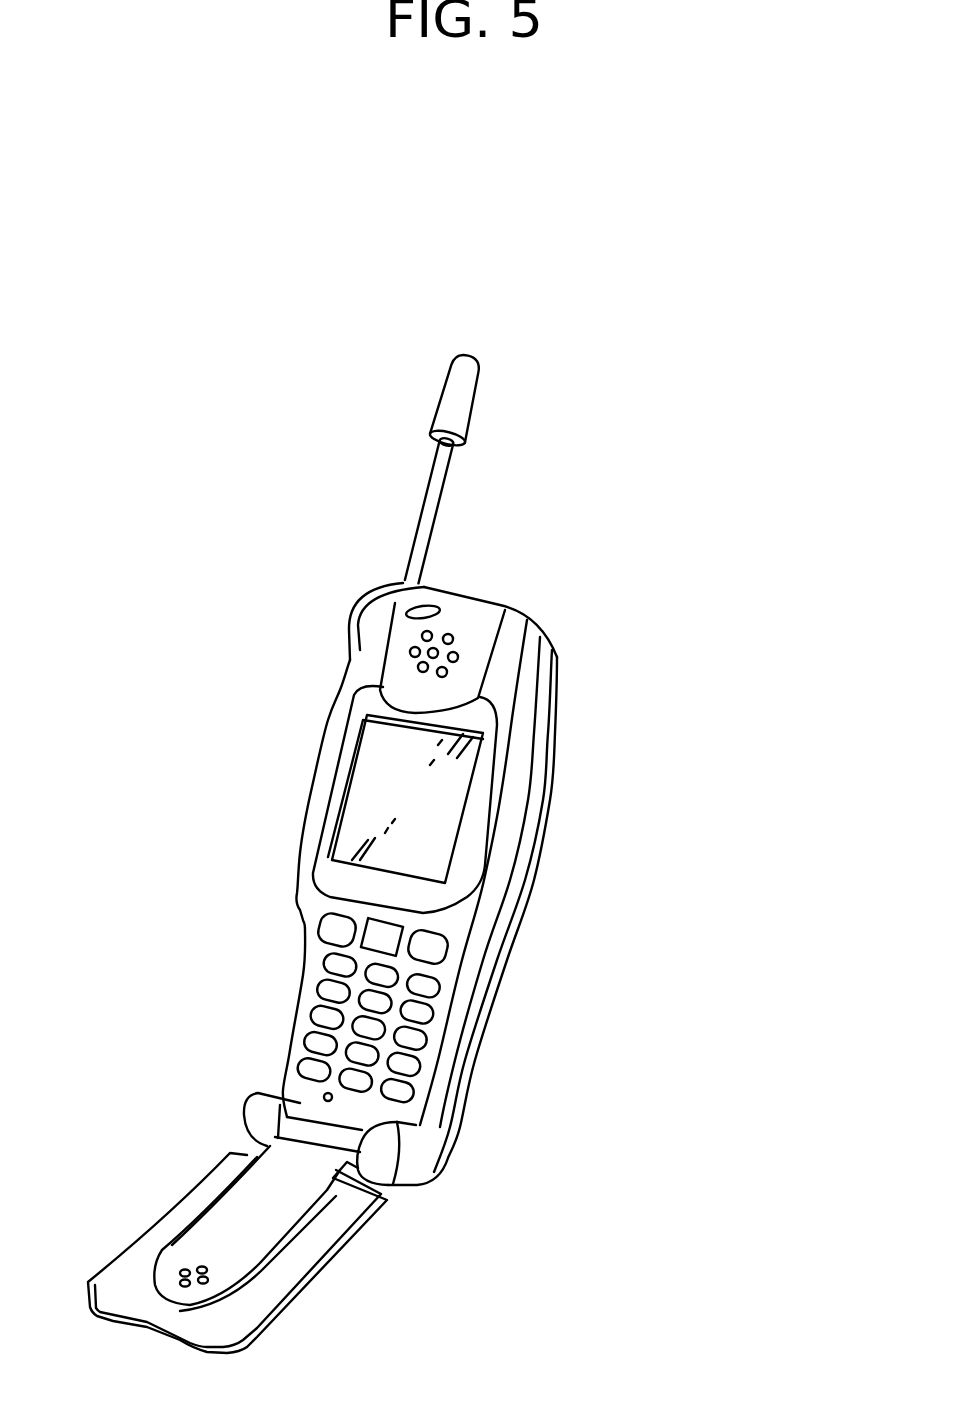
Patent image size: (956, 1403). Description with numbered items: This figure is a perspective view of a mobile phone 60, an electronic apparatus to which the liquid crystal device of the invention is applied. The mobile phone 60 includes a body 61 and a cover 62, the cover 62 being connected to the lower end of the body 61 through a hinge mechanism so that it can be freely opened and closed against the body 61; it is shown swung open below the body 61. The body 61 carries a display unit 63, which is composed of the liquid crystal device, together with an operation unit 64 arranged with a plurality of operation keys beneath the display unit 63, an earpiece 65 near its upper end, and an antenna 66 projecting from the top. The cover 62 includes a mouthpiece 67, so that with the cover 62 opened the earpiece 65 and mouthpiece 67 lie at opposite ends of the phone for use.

The mobile phone 60 is at (633, 542).
The body 61 is at (530, 825).
The cover 62 is at (317, 1275).
The display unit 63 is at (377, 767).
The operation unit 64 is at (428, 1020).
The earpiece 65 is at (410, 651).
The antenna 66 is at (410, 522).
The mouthpiece 67 is at (180, 1270).